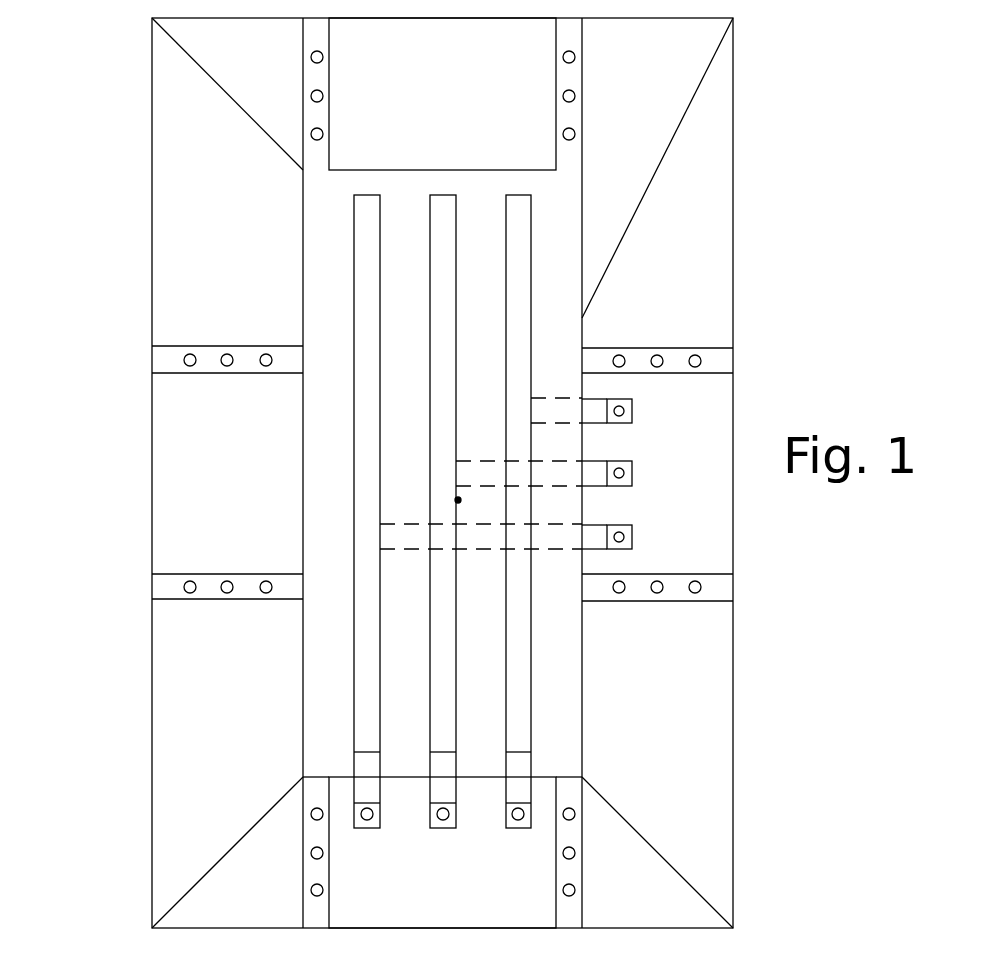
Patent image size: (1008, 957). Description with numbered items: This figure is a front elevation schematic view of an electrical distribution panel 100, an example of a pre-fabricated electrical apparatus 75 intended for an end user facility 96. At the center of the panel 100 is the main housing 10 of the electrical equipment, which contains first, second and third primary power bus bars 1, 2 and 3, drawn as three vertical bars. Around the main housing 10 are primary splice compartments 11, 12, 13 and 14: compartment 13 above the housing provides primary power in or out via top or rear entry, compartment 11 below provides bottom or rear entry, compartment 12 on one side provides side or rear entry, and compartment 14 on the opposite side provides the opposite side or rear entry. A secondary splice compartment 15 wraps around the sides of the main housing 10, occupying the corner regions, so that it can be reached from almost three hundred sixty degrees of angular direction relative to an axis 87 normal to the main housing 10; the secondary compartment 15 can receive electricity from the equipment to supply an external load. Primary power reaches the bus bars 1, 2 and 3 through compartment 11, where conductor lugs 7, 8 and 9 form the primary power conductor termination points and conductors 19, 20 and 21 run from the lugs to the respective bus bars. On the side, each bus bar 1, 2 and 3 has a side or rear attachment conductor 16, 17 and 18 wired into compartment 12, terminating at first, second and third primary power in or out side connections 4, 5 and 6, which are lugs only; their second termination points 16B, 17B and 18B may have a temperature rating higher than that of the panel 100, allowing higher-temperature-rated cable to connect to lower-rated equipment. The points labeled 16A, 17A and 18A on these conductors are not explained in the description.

The first primary power bus bar 1 is at (360, 302).
The second primary power bus bar 2 is at (435, 302).
The third primary power bus bar 3 is at (511, 302).
The first primary power in/out side connection 4 is at (612, 399).
The second primary power in/out side connection 5 is at (612, 462).
The third primary power in/out side connection 6 is at (612, 525).
The conductor lug 7 is at (363, 829).
The conductor lug 8 is at (440, 829).
The conductor lug 9 is at (515, 829).
The main housing 10 is at (394, 647).
The primary splice compartment 11 is at (441, 902).
The primary splice compartment 12 is at (694, 519).
The primary splice compartment 13 is at (441, 112).
The primary splice compartment 14 is at (214, 474).
The secondary splice compartment 15 is at (245, 84).
The primary power conductor 16 is at (577, 411).
The first slot inner end 16A is at (532, 407).
The second termination point 16B is at (632, 410).
The primary power conductor 17 is at (577, 482).
The second slot inner end 17A is at (455, 478).
The second termination point 17B is at (632, 474).
The primary power conductor 18 is at (577, 542).
The third slot inner end 18A is at (380, 547).
The second termination point 18B is at (632, 537).
The primary power conductor 19 is at (373, 771).
The primary power conductor 20 is at (441, 771).
The primary power conductor 21 is at (519, 771).
The pre-fabricated electrical apparatus 75 is at (782, 142).
The axis 87 is at (458, 500).
The end user facility 96 is at (781, 669).
The electrical distribution panel 100 is at (303, 674).